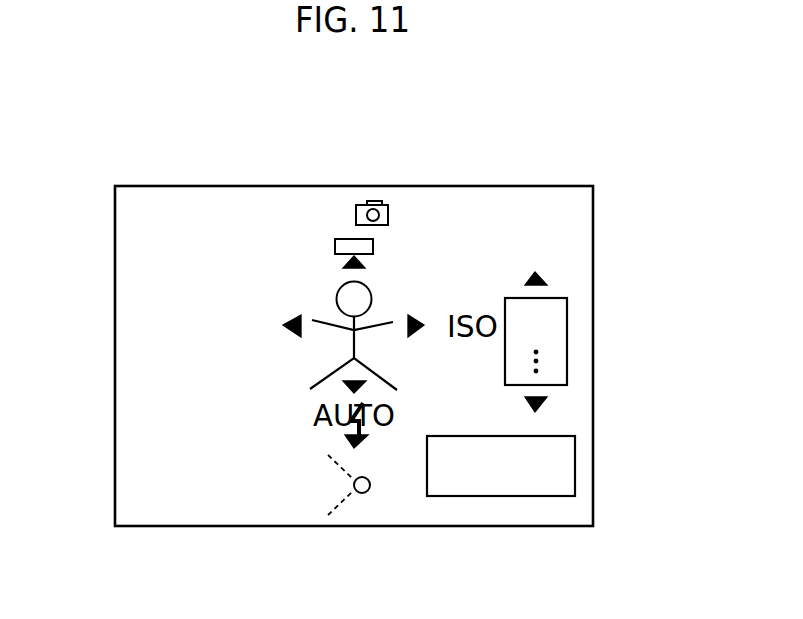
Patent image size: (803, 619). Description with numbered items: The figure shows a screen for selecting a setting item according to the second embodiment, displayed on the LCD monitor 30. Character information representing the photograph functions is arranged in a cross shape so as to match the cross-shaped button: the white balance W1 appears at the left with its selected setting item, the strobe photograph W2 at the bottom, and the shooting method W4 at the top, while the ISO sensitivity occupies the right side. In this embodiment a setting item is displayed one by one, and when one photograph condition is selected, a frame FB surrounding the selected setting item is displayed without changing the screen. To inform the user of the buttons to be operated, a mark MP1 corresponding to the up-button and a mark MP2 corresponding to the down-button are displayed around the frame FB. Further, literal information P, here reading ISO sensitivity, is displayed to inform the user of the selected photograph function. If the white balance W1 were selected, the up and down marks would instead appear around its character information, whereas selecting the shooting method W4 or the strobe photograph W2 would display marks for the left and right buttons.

The LCD monitor 30 is at (604, 162).
The white balance W1 is at (160, 323).
The strobe photograph W2 is at (362, 493).
The shooting method W4 is at (388, 202).
The mark MP1 is at (547, 276).
The mark MP2 is at (547, 405).
The frame FB is at (567, 336).
The literal information P is at (575, 466).